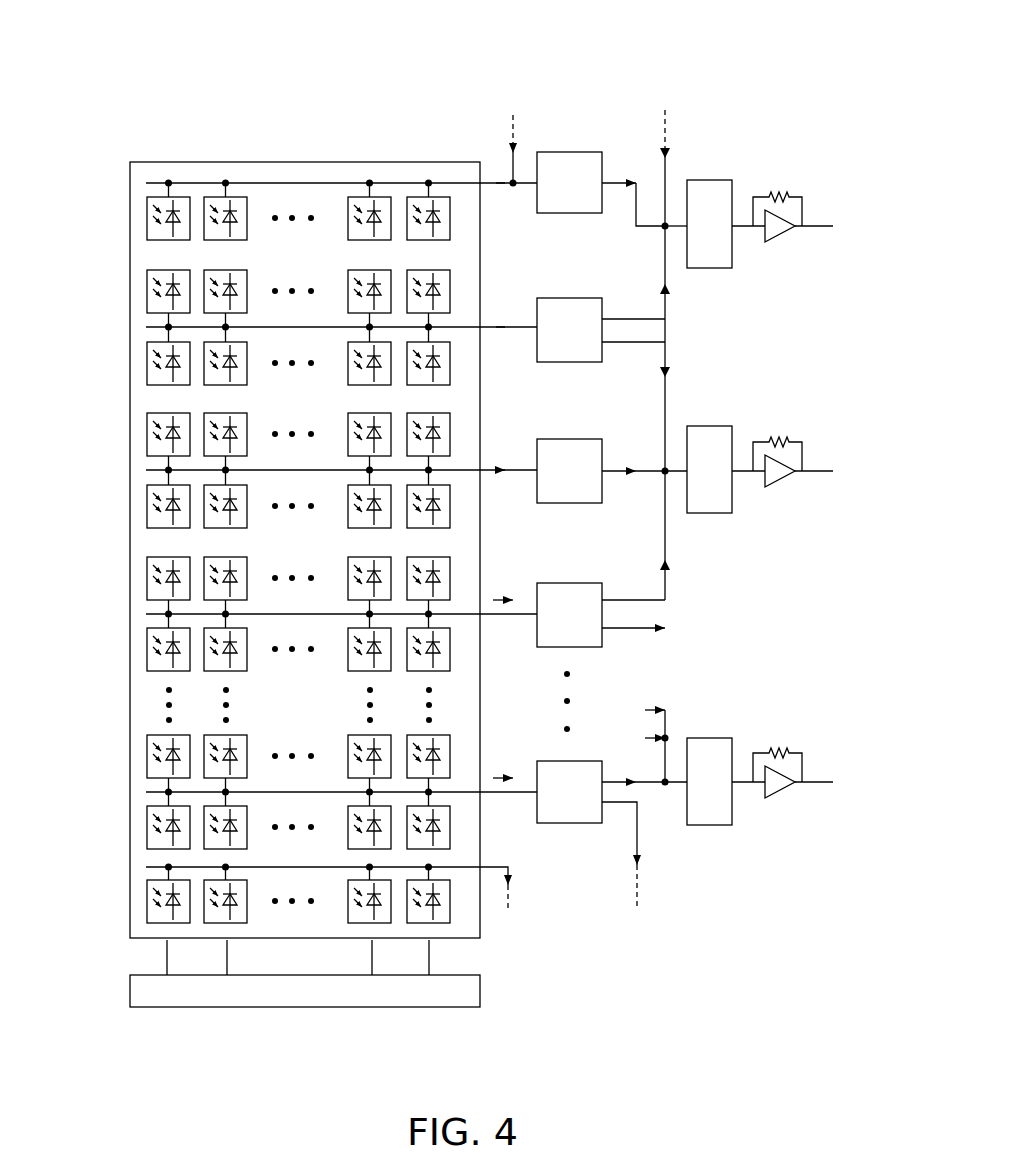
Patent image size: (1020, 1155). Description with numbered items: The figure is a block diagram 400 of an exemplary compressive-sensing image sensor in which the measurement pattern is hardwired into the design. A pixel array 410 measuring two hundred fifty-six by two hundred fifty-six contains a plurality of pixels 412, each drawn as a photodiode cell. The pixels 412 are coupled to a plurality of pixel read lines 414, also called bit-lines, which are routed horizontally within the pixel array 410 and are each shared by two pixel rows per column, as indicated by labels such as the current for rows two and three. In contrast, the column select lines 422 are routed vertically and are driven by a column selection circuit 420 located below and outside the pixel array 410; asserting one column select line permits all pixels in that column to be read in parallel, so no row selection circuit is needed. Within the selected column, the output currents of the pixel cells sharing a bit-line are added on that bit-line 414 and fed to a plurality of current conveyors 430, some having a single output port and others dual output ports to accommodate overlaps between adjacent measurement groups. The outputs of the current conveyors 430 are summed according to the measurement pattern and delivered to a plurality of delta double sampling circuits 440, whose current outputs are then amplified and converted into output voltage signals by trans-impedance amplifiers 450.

The block diagram 400 is at (792, 61).
The pixel array 410 is at (152, 162).
The pixels 412 is at (147, 425).
The pixel read lines 414 is at (155, 867).
The column selection circuit 420 is at (167, 1010).
The column select lines 422 is at (162, 944).
The current conveyors 430 is at (617, 97).
The delta double sampling circuits 440 is at (676, 176).
The trans-impedance amplifiers 450 is at (748, 192).